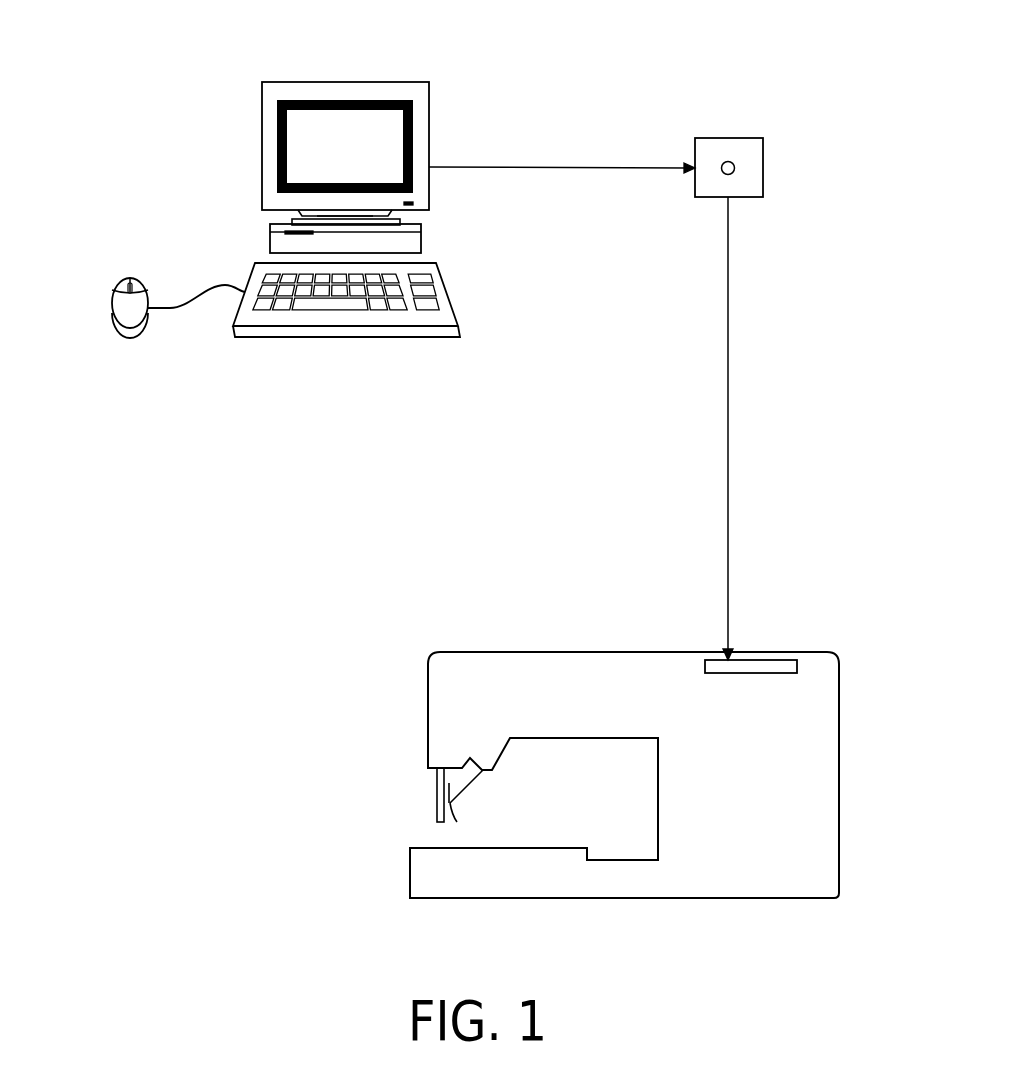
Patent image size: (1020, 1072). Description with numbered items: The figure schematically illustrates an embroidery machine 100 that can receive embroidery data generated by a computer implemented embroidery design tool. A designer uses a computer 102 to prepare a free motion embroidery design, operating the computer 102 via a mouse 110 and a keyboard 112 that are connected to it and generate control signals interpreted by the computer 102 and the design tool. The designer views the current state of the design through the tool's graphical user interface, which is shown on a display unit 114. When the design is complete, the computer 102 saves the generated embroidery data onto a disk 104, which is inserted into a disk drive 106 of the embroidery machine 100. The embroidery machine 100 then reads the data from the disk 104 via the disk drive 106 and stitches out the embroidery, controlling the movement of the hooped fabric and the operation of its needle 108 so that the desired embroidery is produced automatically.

The embroidery machine 100 is at (839, 795).
The computer 102 is at (253, 79).
The disk 104 is at (763, 138).
The disk drive 106 is at (797, 660).
The needle 108 is at (437, 812).
The mouse 110 is at (118, 282).
The keyboard 112 is at (448, 295).
The display unit 114 is at (308, 150).